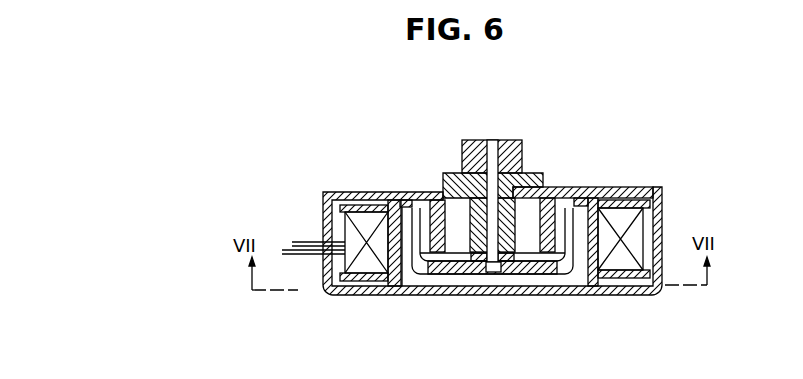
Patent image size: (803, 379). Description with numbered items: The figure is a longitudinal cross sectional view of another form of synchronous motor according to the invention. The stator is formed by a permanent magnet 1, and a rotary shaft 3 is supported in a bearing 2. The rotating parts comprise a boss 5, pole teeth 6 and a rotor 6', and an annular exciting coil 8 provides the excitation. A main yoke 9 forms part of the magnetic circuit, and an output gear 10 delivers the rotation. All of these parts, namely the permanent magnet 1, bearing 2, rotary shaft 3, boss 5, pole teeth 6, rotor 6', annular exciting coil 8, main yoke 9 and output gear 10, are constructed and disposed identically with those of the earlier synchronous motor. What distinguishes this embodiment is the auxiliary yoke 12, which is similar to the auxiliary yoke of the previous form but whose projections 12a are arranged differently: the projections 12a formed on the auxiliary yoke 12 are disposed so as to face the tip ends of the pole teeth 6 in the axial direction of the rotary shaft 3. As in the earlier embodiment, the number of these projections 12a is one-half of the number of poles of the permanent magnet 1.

The permanent magnet 1 is at (560, 194).
The bearing 2 is at (530, 180).
The rotary shaft 3 is at (492, 152).
The boss 5 is at (478, 262).
The pole teeth 6 is at (504, 272).
The rotor 6' is at (492, 299).
The annular exciting coil 8 is at (636, 232).
The main yoke 9 is at (402, 296).
The output gear 10 is at (470, 142).
The auxiliary yoke 12 is at (345, 193).
The projections 12a is at (417, 199).